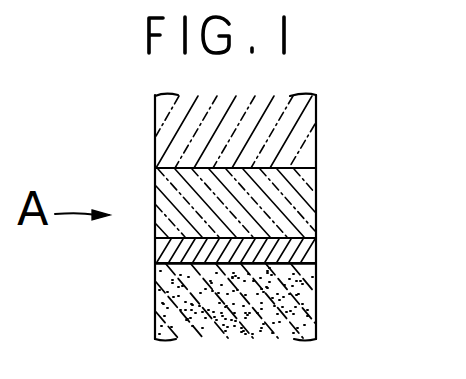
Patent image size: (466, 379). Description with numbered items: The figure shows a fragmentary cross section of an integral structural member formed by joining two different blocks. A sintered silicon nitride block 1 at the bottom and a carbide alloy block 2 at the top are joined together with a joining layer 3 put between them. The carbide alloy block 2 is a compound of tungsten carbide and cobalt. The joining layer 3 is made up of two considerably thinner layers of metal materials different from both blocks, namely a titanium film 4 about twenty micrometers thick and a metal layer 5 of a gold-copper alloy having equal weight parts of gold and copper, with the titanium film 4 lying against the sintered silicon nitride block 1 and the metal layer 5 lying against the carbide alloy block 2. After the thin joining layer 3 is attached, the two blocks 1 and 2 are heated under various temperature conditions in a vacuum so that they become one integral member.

The sintered silicon nitride block 1 is at (303, 313).
The carbide alloy block 2 is at (300, 132).
The joining layer 3 is at (379, 173).
The titanium film 4 is at (300, 253).
The metal layer 5 is at (300, 205).